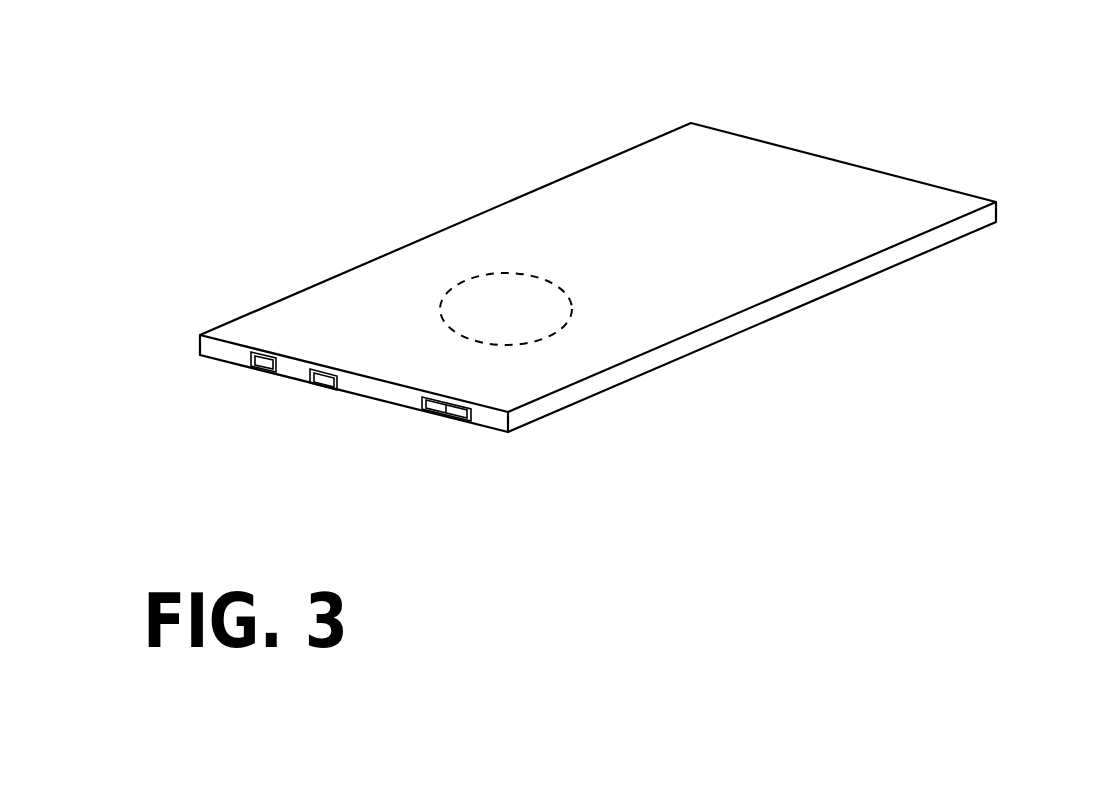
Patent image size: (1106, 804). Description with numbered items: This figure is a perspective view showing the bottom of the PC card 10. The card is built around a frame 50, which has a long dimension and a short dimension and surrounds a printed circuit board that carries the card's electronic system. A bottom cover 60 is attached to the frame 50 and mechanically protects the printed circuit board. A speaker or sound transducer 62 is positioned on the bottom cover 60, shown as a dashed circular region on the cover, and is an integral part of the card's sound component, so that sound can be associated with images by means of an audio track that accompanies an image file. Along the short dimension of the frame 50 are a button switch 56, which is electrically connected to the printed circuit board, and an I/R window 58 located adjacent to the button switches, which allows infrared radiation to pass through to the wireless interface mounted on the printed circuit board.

The PC card 10 is at (856, 104).
The frame 50 is at (968, 227).
The button switch 56 is at (322, 378).
The I/R window 58 is at (460, 412).
The bottom cover 60 is at (688, 152).
The speaker or sound transducer 62 is at (480, 292).